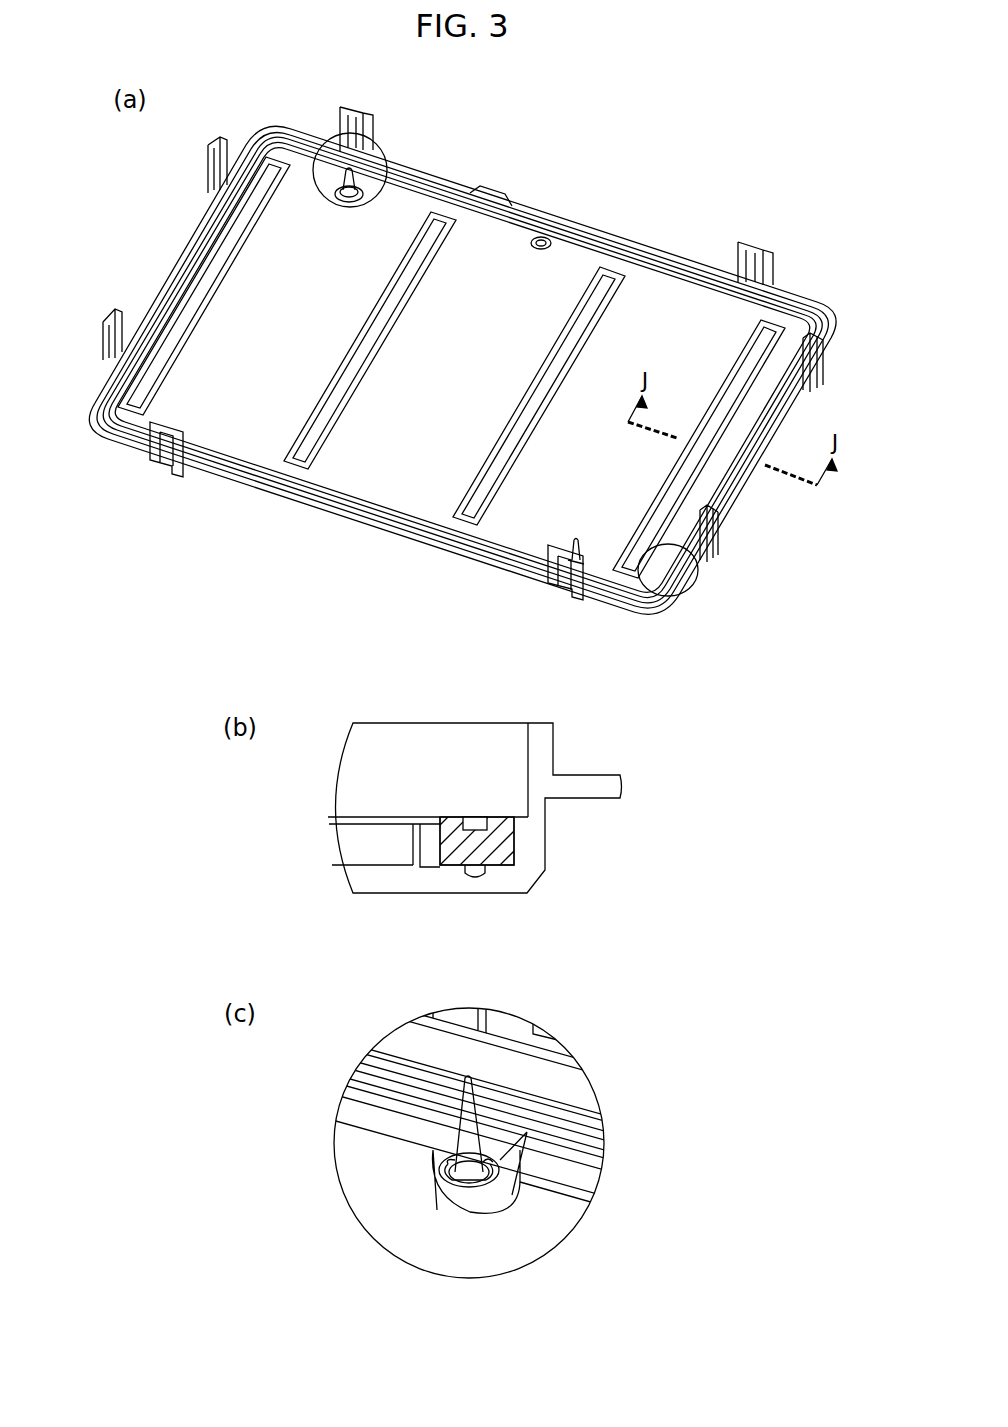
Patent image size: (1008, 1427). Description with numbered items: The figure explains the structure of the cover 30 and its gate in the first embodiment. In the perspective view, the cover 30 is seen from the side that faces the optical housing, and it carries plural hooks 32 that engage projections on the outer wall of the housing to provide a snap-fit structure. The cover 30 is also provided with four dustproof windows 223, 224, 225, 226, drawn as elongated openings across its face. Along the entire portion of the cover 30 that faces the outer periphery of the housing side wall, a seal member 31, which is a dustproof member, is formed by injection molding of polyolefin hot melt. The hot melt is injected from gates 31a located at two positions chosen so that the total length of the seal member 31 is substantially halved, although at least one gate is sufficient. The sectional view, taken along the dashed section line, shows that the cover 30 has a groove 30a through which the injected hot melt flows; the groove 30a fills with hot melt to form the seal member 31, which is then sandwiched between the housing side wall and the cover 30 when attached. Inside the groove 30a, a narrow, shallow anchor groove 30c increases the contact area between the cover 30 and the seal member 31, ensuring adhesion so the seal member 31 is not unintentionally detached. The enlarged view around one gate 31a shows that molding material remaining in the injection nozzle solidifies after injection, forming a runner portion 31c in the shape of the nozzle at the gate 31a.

The cover 30 is at (565, 262).
The seal member 31 is at (695, 266).
The gate 31a is at (352, 172).
The runner portion 31c is at (460, 1160).
The hook 32 is at (360, 106).
The groove 30a is at (514, 838).
The anchor groove 30c is at (475, 878).
The dustproof window 223 is at (640, 548).
The dustproof window 224 is at (462, 528).
The dustproof window 225 is at (287, 462).
The dustproof window 226 is at (130, 416).